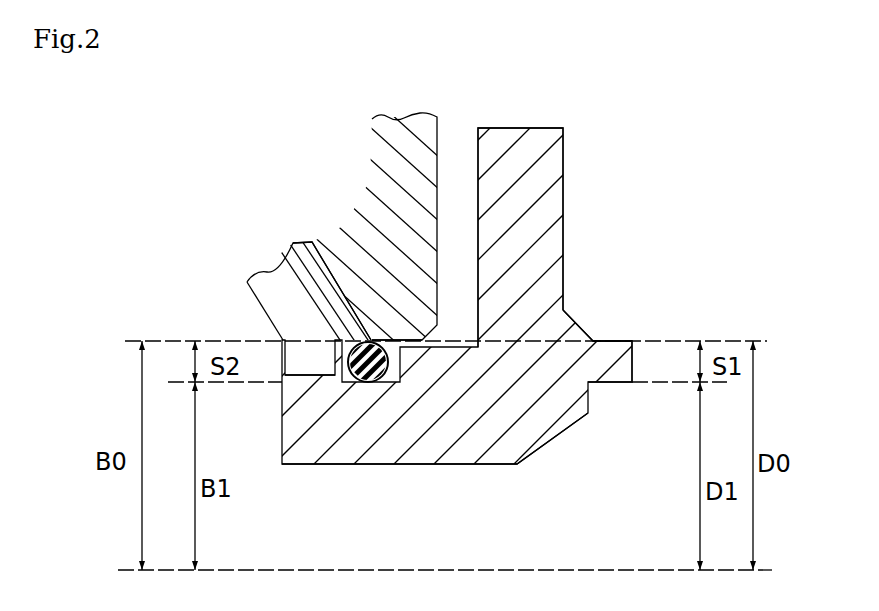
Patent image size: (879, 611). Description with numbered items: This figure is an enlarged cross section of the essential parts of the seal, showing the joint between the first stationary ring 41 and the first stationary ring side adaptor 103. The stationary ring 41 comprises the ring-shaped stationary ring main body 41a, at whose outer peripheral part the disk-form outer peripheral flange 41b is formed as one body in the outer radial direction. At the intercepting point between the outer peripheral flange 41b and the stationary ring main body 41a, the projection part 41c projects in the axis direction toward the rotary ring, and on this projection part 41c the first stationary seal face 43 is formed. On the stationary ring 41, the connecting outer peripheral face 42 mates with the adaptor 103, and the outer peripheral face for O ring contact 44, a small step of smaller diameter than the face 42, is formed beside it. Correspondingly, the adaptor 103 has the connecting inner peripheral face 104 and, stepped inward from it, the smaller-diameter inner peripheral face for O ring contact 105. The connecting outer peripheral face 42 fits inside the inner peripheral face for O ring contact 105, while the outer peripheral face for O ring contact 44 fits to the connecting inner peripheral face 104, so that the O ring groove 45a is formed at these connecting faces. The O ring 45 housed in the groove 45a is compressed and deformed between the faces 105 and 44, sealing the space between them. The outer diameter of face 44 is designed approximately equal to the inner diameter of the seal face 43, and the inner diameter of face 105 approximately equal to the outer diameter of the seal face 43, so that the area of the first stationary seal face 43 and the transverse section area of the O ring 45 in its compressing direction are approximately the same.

The stationary ring 41 is at (572, 210).
The stationary ring main body 41a is at (460, 410).
The outer peripheral flange 41b is at (525, 127).
The projection part 41c is at (610, 348).
The connecting outer peripheral face 42 is at (464, 345).
The first stationary seal face 43 is at (635, 362).
The outer peripheral face for O ring contact 44 is at (267, 265).
The O ring 45 is at (294, 242).
The O ring groove 45a is at (400, 388).
The first stationary ring side adaptor 103 is at (412, 197).
The connecting inner peripheral face 104 is at (313, 378).
The inner peripheral face for O ring contact 105 is at (372, 335).